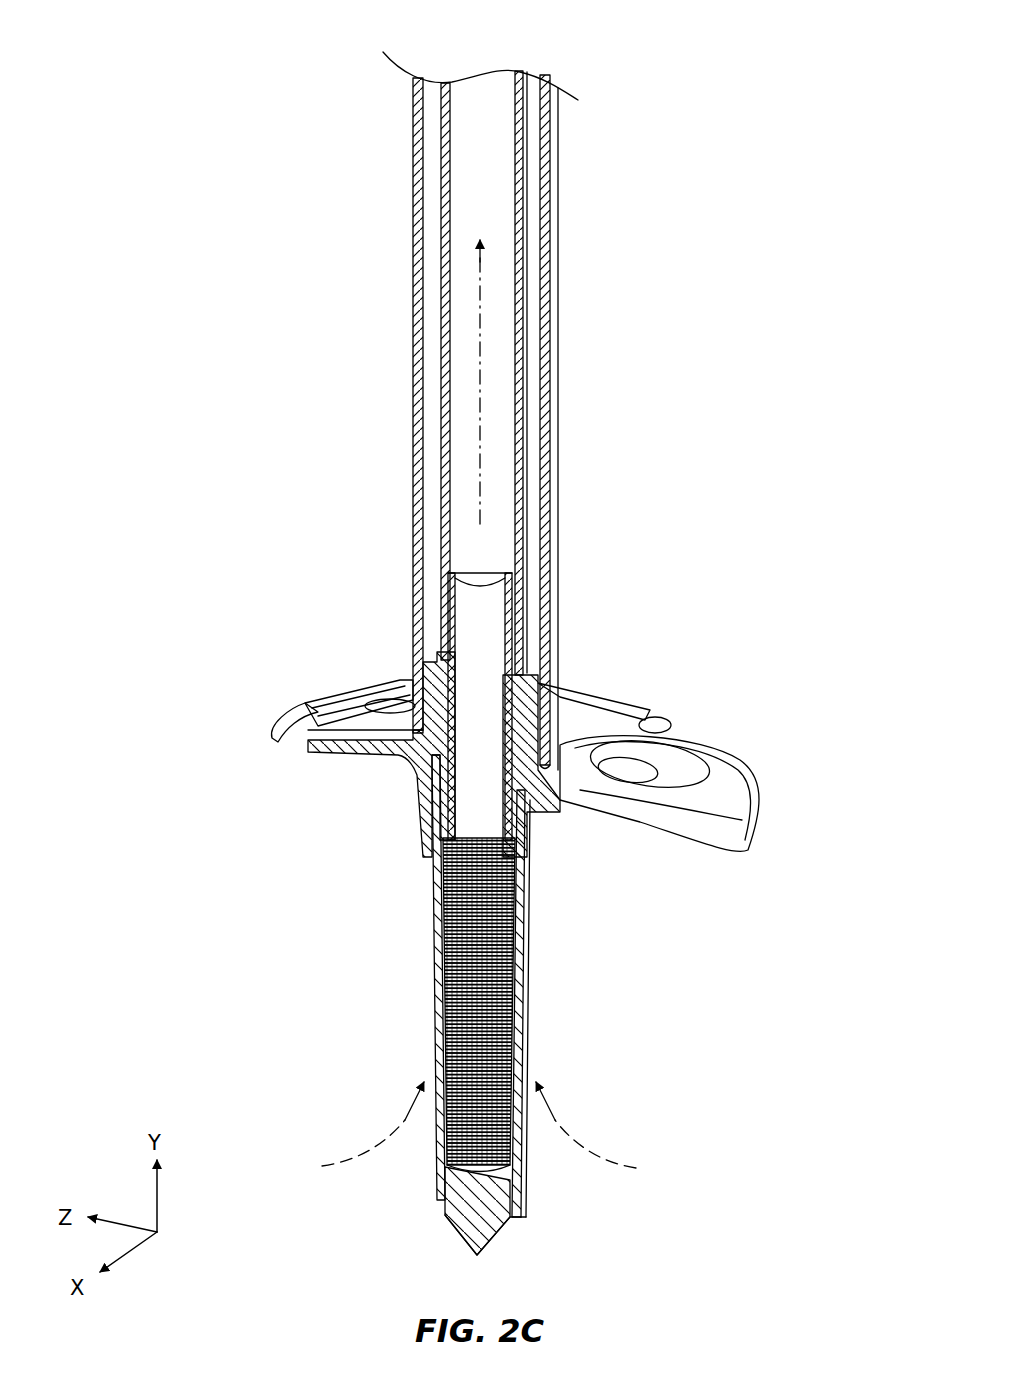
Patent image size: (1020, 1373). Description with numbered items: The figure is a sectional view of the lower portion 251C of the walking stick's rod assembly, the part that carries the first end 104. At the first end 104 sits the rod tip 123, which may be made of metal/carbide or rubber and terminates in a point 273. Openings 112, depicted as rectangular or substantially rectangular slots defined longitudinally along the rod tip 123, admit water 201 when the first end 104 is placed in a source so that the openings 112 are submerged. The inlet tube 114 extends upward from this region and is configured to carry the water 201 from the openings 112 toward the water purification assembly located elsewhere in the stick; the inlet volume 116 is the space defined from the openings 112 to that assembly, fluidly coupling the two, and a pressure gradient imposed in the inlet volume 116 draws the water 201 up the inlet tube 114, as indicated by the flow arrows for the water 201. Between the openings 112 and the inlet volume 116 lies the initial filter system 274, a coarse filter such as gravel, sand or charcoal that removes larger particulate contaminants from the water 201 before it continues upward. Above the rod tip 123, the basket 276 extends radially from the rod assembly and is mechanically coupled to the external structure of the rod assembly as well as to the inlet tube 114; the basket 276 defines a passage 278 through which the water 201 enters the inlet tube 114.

The lower portion 251C is at (766, 52).
The water 201 is at (480, 352).
The inlet volume 116 is at (498, 505).
The inlet tube 114 is at (523, 510).
The basket 276 is at (745, 822).
The passage 278 is at (467, 805).
The rod tip 123 is at (528, 903).
The openings 112 is at (484, 986).
The initial filter system 274 is at (500, 1018).
The point 273 is at (460, 1205).
The first end 104 is at (478, 1257).